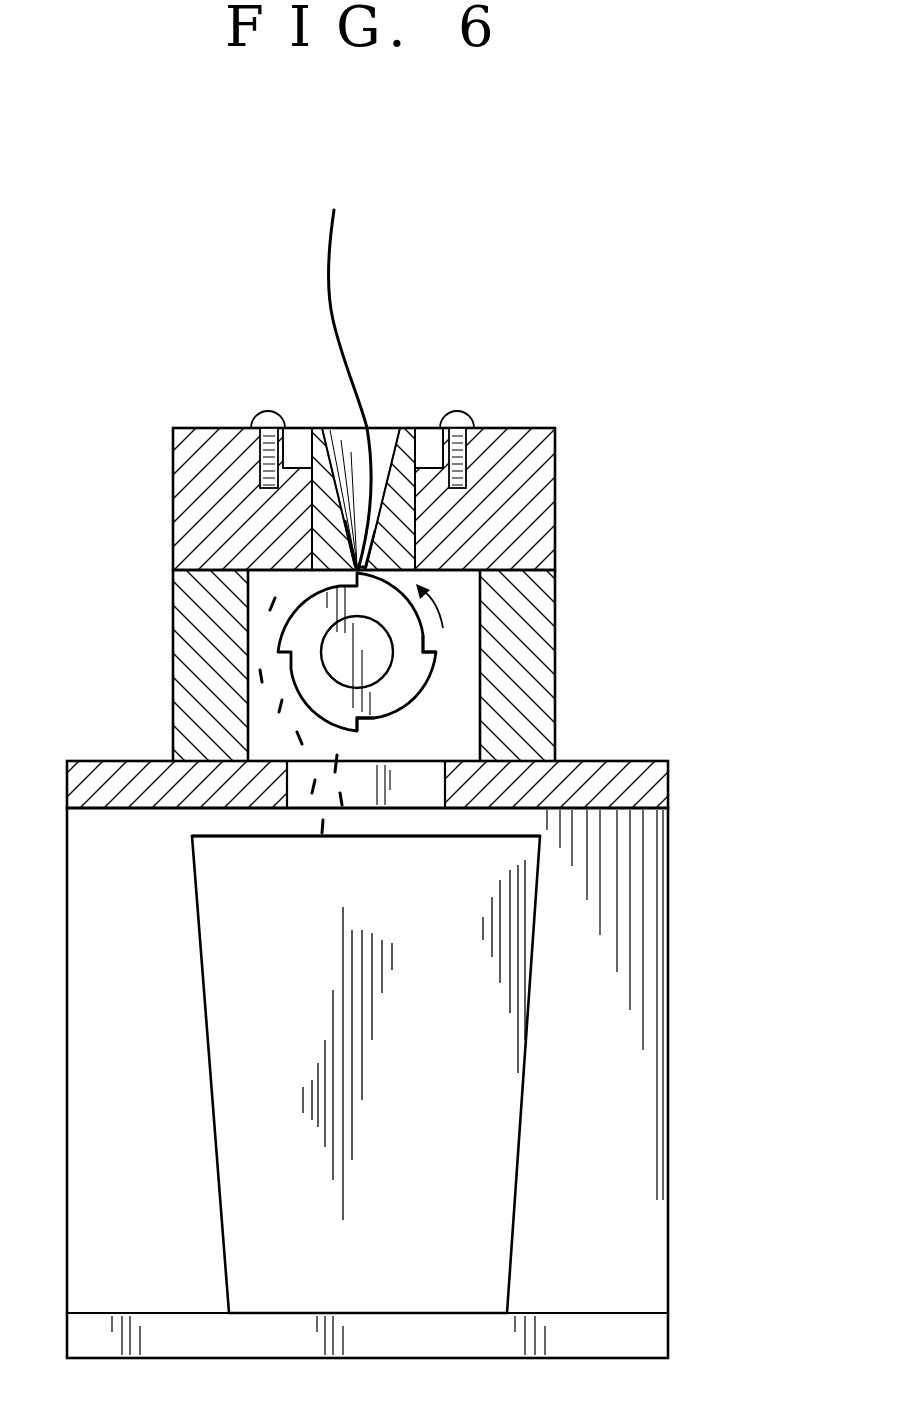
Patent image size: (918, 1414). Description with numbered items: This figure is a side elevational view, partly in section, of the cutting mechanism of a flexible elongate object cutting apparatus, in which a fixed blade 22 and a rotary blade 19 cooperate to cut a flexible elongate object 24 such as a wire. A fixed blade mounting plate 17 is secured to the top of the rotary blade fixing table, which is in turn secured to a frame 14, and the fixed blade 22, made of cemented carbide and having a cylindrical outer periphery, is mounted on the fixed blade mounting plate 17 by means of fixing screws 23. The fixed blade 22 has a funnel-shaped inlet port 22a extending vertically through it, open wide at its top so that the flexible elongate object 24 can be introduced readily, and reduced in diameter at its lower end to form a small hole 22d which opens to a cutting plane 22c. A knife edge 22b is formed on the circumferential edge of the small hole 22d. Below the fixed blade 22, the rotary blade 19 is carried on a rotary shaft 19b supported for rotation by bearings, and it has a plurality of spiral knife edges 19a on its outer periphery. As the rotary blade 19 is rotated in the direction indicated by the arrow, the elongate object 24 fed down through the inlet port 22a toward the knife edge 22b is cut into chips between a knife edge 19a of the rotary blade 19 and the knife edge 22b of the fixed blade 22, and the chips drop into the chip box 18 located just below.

The frame 14 is at (667, 795).
The fixed blade mounting plate 17 is at (557, 468).
The chip box 18 is at (505, 997).
The rotary blade 19 is at (410, 614).
The spiral knife edge 19a is at (362, 733).
The rotary shaft 19b is at (321, 636).
The fixed blade 22 is at (340, 428).
The funnel-shaped inlet port 22a is at (383, 428).
The knife edge 22b is at (357, 567).
The cutting plane 22c is at (355, 590).
The small hole 22d is at (362, 565).
The fixing screw 23 is at (265, 414).
The flexible elongate object 24 is at (337, 242).